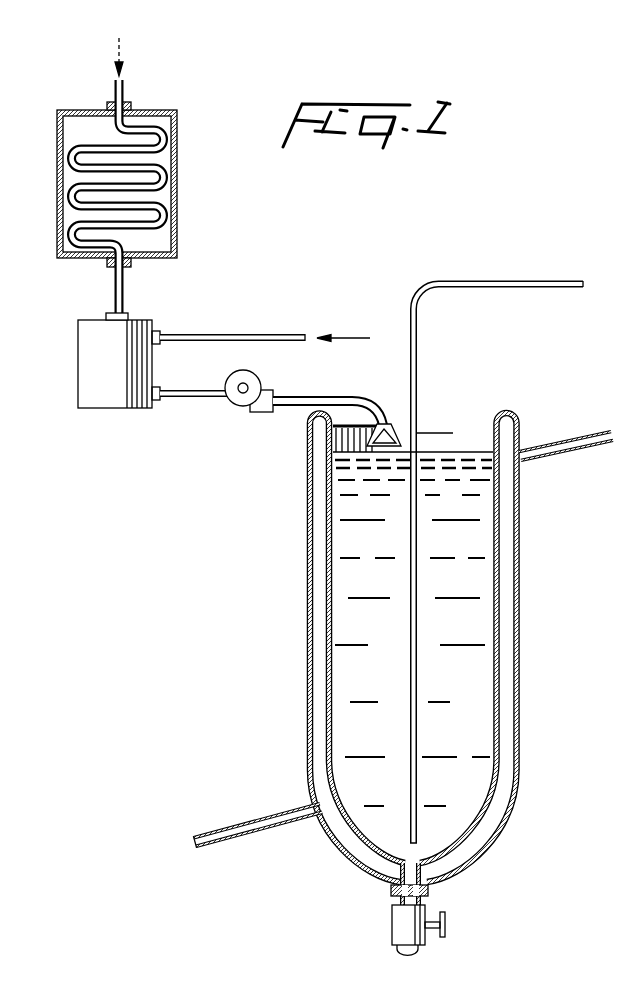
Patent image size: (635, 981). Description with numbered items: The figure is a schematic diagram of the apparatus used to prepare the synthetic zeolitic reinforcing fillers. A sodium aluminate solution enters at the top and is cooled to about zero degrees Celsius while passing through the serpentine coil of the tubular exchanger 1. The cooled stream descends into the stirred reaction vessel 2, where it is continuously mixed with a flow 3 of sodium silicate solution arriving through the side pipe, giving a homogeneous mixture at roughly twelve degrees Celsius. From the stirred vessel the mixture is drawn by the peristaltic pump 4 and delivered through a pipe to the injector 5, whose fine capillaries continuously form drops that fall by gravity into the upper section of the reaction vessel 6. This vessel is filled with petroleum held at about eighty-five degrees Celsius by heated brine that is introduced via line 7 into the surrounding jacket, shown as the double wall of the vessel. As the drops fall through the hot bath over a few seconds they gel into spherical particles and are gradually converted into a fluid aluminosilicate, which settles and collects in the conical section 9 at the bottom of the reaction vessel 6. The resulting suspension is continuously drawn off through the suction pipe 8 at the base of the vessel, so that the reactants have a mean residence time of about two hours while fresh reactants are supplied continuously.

The tubular exchanger 1 is at (177, 203).
The stirred reaction vessel 2 is at (95, 400).
The flow of sodium silicate solution 3 is at (230, 337).
The peristaltic pump 4 is at (255, 410).
The injector 5 is at (377, 440).
The reaction vessel 6 is at (377, 575).
The line 7 is at (247, 823).
The suction pipe 8 is at (398, 925).
The conical section 9 is at (488, 827).